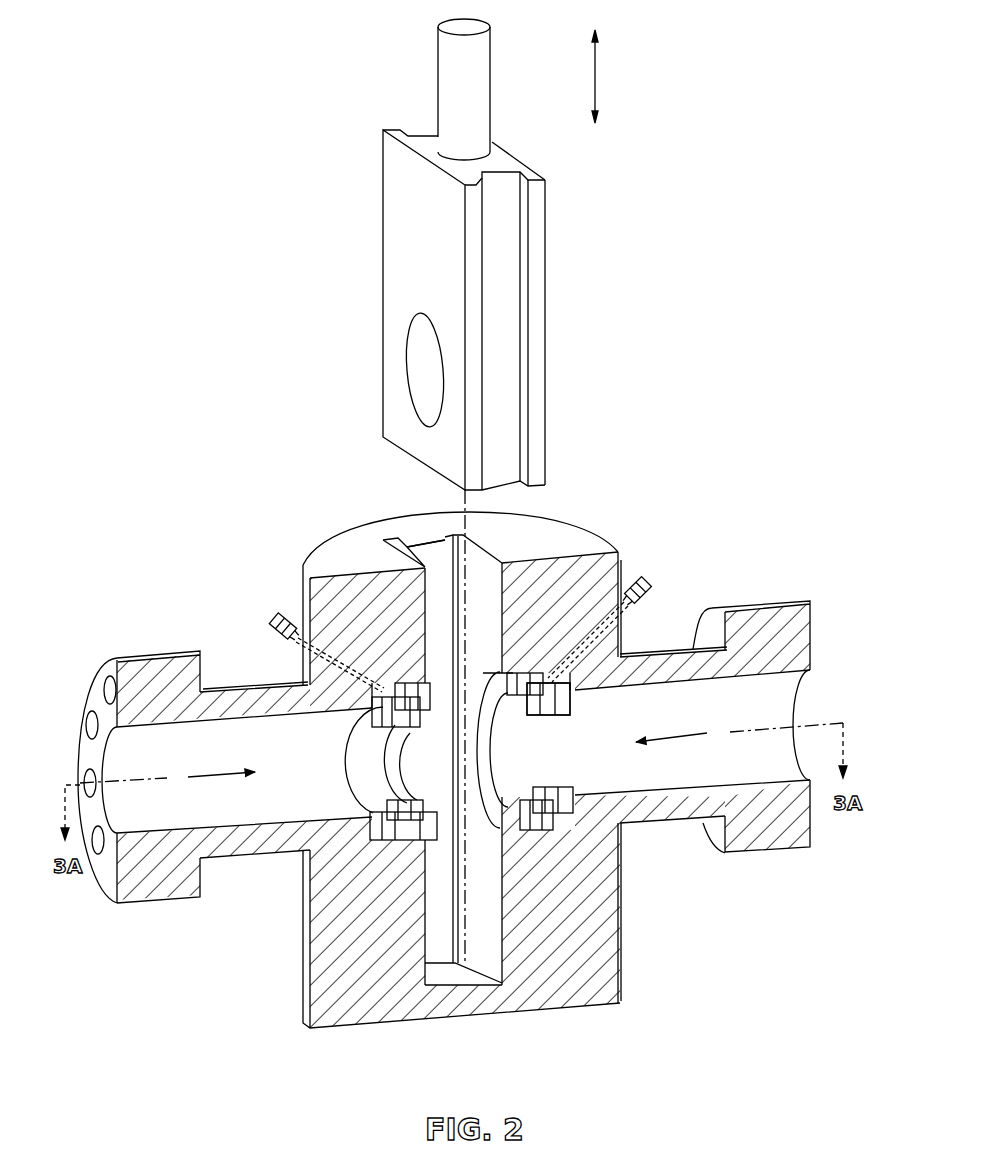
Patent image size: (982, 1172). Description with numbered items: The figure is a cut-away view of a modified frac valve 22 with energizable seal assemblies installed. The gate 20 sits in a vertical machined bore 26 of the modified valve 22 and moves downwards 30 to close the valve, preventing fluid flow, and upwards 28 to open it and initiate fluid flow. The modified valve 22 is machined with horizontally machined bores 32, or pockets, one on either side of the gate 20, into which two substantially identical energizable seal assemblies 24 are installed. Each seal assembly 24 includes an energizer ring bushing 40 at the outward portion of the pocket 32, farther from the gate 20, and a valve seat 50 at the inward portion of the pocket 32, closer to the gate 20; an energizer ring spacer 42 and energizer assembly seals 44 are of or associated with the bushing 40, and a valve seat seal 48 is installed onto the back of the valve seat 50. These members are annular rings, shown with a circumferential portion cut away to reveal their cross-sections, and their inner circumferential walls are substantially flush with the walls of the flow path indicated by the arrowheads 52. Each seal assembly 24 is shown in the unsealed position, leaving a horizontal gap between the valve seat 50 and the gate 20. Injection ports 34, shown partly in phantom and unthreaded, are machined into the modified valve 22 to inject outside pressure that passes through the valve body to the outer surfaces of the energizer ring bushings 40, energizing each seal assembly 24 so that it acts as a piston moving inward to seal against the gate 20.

The gate 20 is at (393, 238).
The modified valve 22 is at (183, 920).
The energizable seal assembly 24 is at (477, 842).
The vertical machined bore 26 is at (475, 557).
The upwards direction 28 is at (595, 37).
The downwards direction 30 is at (596, 122).
The horizontally machined bore (pocket) 32 is at (483, 757).
The injection port 34 is at (270, 622).
The energizer ring bushing 40 is at (400, 833).
The energizer ring spacer 42 is at (556, 702).
The energizer assembly seal 44 is at (375, 716).
The valve seat seal 48 is at (540, 680).
The valve seat 50 is at (428, 835).
The arrowheads 52 is at (233, 772).